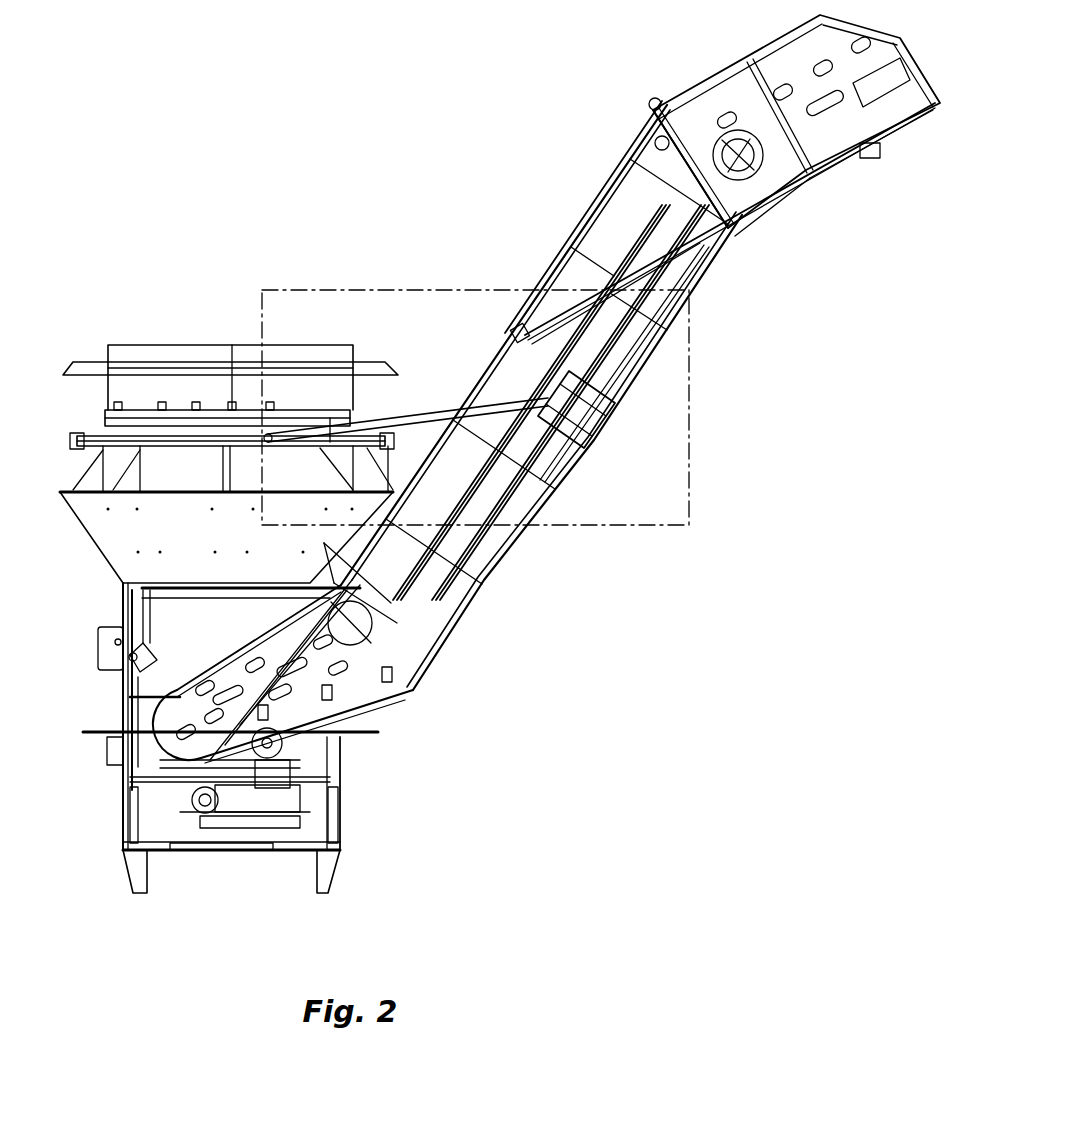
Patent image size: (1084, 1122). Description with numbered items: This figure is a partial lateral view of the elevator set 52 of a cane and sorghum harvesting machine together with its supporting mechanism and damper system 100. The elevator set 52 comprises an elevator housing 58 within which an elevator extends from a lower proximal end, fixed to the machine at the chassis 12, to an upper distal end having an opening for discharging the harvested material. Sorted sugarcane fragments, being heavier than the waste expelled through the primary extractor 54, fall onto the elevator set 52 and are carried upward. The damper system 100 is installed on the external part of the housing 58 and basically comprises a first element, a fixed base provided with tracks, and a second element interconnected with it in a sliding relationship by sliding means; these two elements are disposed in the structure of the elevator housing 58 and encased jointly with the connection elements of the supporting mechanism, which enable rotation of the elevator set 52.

The chassis 12 is at (123, 775).
The elevator set 52 is at (472, 624).
The primary extractor 54 is at (192, 318).
The elevator housing 58 is at (590, 200).
The damper system 100 is at (610, 458).